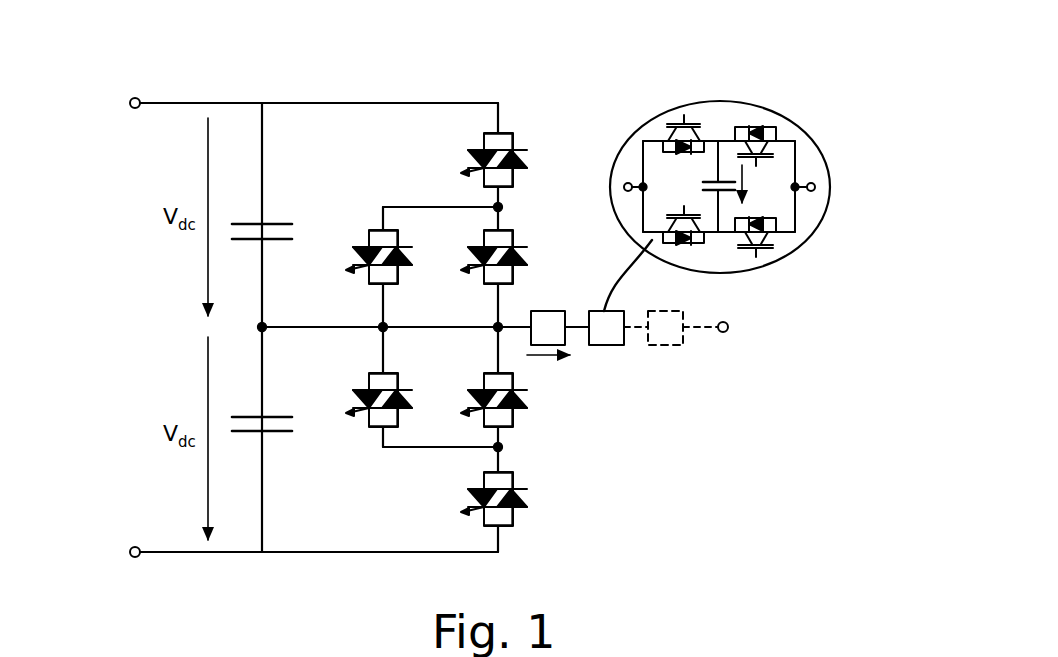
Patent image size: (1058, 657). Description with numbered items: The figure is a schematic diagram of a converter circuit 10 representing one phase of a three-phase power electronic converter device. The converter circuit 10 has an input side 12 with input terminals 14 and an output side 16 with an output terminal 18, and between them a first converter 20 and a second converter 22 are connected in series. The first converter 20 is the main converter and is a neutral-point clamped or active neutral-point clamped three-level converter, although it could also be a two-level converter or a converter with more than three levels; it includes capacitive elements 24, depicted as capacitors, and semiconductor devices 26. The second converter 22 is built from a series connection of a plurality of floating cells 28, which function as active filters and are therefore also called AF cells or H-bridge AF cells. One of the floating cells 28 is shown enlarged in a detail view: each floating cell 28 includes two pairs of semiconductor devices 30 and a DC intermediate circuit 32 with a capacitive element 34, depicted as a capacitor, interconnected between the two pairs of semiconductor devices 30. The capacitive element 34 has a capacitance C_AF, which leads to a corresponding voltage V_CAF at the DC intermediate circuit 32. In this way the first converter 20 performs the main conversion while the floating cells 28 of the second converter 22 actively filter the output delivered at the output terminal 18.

The converter circuit 10 is at (664, 528).
The input side 12 is at (138, 92).
The input terminals 14 is at (128, 105).
The output side 16 is at (723, 380).
The output terminal 18 is at (731, 330).
The first converter 20 is at (546, 549).
The second converter 22 is at (683, 432).
The capacitive elements 24 is at (283, 220).
The semiconductor devices 26 is at (462, 140).
The floating cells 28 is at (546, 310).
The semiconductor devices 30 is at (668, 95).
The DC intermediate circuit 32 is at (718, 122).
The capacitive element 34 is at (700, 182).